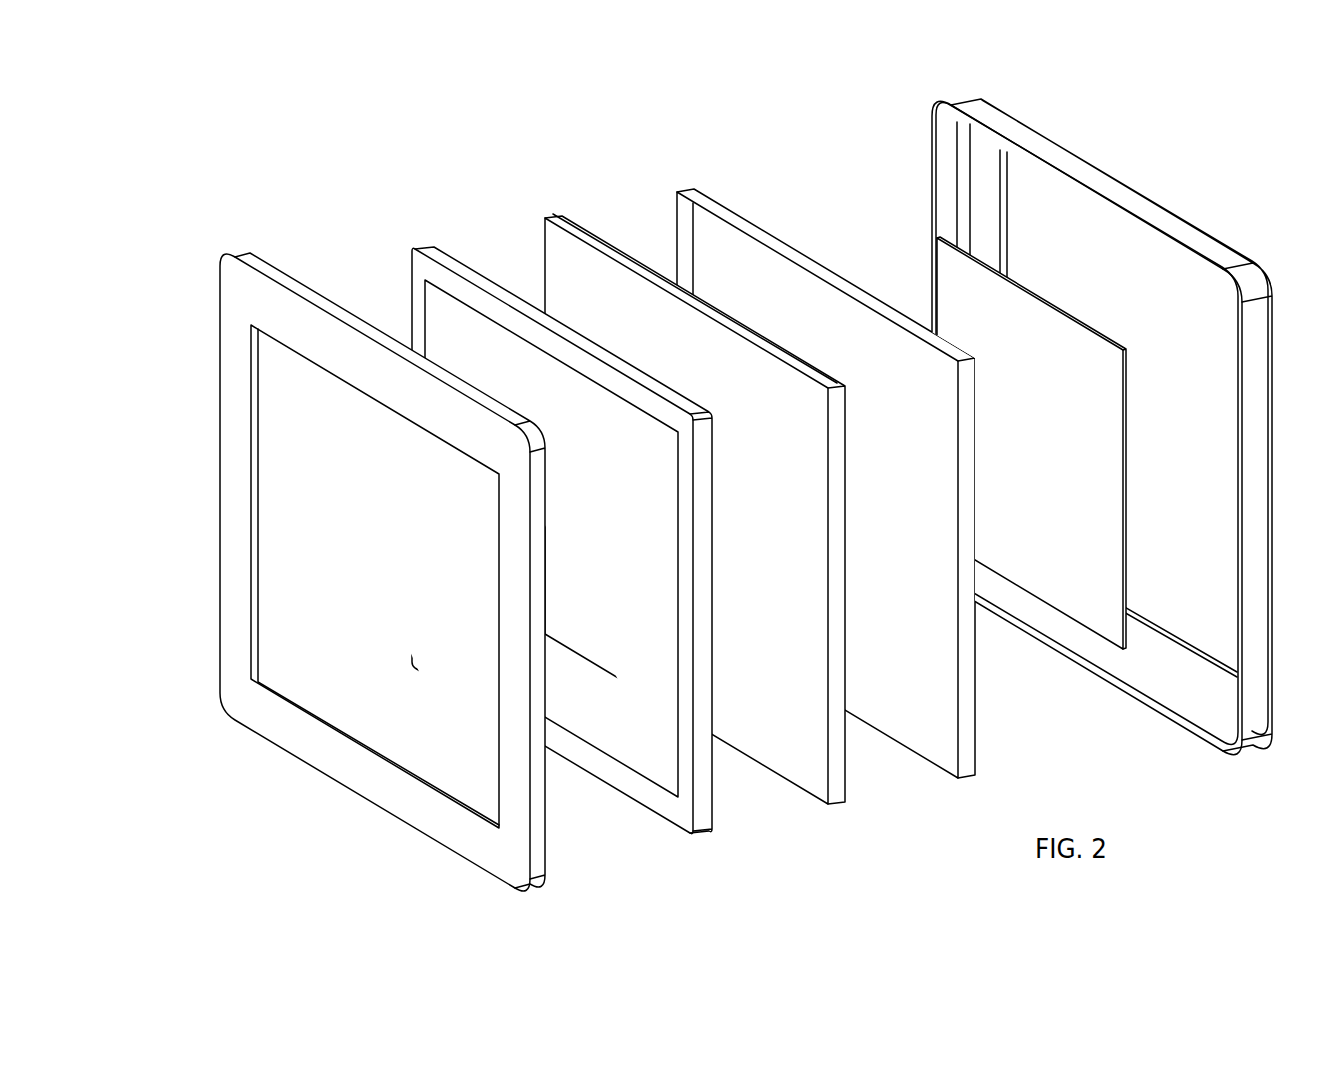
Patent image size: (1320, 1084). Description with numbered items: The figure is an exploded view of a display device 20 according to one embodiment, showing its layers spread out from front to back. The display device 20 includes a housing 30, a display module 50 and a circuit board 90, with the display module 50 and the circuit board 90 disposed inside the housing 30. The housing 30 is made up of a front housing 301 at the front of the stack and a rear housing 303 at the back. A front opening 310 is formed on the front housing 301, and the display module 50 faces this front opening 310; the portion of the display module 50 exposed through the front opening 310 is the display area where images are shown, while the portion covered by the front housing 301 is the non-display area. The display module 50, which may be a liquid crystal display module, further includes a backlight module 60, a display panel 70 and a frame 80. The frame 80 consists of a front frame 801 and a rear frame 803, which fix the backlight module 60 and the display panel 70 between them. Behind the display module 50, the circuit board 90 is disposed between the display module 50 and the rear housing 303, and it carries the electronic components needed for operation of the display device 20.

The display device 20 is at (271, 112).
The housing 30 is at (708, 498).
The front housing 301 is at (495, 573).
The rear housing 303 is at (1152, 707).
The front opening 310 is at (265, 462).
The display module 50 is at (682, 445).
The backlight module 60 is at (572, 223).
The display panel 70 is at (667, 445).
The frame 80 is at (475, 147).
The front frame 801 is at (550, 495).
The rear frame 803 is at (717, 250).
The circuit board 90 is at (948, 270).